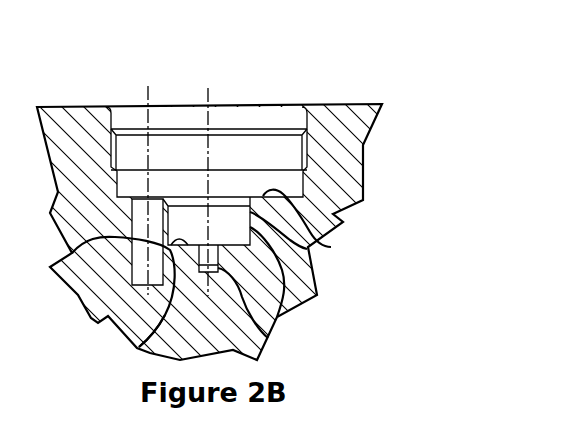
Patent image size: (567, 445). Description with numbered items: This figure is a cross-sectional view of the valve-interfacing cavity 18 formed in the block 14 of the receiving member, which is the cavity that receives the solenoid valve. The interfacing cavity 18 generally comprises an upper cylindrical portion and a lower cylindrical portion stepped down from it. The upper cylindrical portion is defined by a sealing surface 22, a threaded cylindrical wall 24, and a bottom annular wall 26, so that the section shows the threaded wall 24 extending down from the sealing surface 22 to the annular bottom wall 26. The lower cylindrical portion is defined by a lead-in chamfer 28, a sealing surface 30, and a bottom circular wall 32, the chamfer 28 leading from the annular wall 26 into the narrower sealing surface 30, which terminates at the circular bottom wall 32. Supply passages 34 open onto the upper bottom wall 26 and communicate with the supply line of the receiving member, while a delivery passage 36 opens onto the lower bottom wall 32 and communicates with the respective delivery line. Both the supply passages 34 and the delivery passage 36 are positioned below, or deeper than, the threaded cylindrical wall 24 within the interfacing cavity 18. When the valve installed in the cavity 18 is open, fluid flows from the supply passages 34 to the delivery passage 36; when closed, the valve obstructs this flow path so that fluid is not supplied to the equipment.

The block 14 is at (327, 173).
The valve-interfacing cavity 18 is at (320, 96).
The sealing surface 22 is at (113, 119).
The threaded cylindrical wall 24 is at (112, 156).
The bottom annular wall 26 is at (331, 247).
The lead-in chamfer 28 is at (310, 266).
The sealing surface 30 is at (280, 317).
The bottom circular wall 32 is at (139, 347).
The supply passages 34 is at (72, 253).
The delivery passage 36 is at (277, 338).